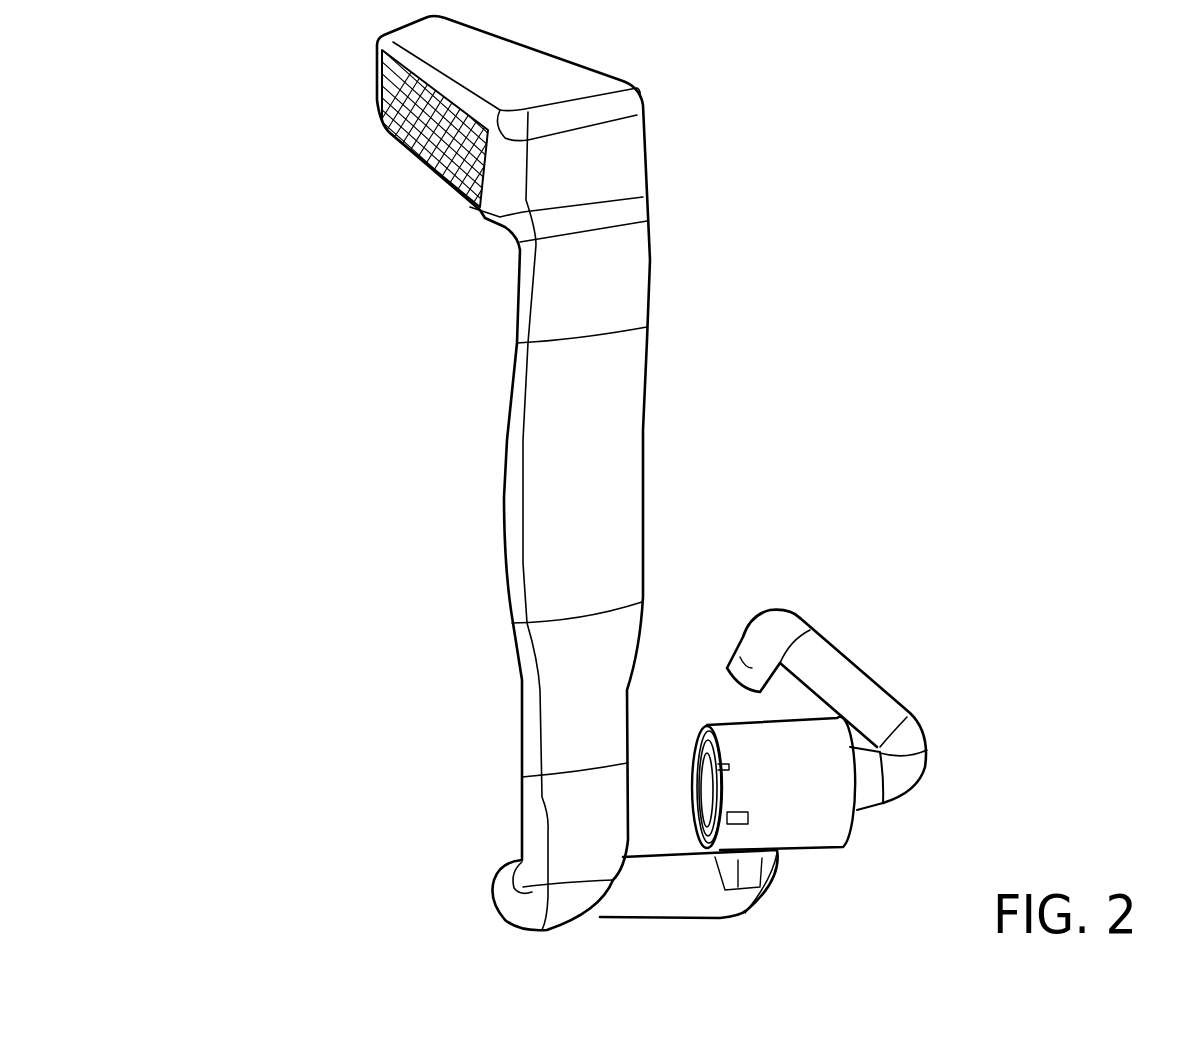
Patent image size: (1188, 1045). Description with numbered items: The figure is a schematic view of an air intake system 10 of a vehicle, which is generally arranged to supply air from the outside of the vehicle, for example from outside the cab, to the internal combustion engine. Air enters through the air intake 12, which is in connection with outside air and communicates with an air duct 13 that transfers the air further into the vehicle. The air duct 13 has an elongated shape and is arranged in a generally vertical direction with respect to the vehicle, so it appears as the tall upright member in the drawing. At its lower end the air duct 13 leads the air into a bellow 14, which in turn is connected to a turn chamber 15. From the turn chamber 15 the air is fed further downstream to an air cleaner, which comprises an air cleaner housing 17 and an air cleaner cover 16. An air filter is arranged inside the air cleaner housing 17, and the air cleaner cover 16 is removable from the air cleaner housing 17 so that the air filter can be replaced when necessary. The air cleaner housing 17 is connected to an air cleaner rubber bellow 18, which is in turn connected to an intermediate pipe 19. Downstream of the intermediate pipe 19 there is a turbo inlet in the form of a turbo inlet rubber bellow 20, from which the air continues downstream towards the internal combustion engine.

The air intake system 10 is at (165, 149).
The air intake 12 is at (415, 168).
The air duct 13 is at (565, 430).
The bellow 14 is at (575, 830).
The turn chamber 15 is at (675, 900).
The air cleaner cover 16 is at (707, 793).
The air cleaner housing 17 is at (803, 788).
The air cleaner rubber bellow 18 is at (867, 783).
The intermediate pipe 19 is at (847, 687).
The turbo inlet rubber bellow 20 is at (747, 667).